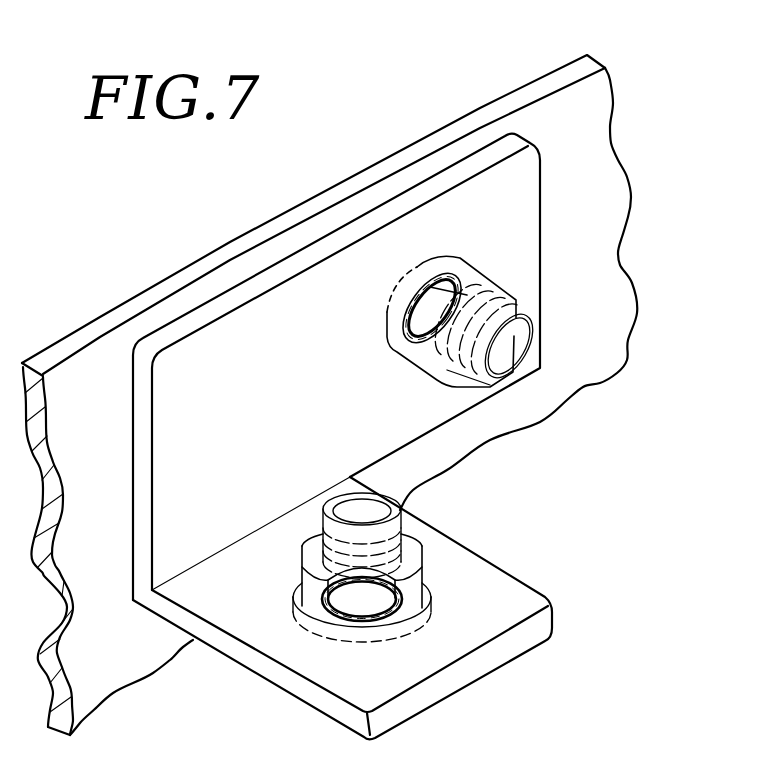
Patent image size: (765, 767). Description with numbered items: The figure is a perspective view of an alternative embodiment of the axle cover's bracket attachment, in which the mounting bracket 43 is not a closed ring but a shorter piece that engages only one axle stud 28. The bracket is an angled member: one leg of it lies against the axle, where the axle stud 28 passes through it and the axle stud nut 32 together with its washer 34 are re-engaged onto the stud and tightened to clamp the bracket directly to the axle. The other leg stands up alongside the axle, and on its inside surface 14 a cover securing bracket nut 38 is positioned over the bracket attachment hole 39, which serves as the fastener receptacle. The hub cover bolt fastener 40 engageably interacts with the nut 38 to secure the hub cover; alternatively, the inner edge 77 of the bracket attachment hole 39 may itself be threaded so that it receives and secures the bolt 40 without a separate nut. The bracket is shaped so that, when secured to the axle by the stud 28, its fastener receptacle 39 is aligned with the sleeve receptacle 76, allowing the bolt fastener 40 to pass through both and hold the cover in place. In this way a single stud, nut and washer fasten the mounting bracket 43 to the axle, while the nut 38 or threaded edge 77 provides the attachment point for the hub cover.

The inside surface 14 is at (602, 127).
The hub cover bolt fastener 40 is at (517, 347).
The mounting bracket 43 is at (512, 603).
The cover securing bracket nut 38 is at (467, 273).
The bracket attachment hole 39 is at (480, 298).
The sleeve receptacle 76 is at (450, 284).
The inner edge 77 is at (409, 327).
The axle stud 28 is at (396, 515).
The axle stud nut 32 is at (417, 593).
The washer 34 is at (397, 638).